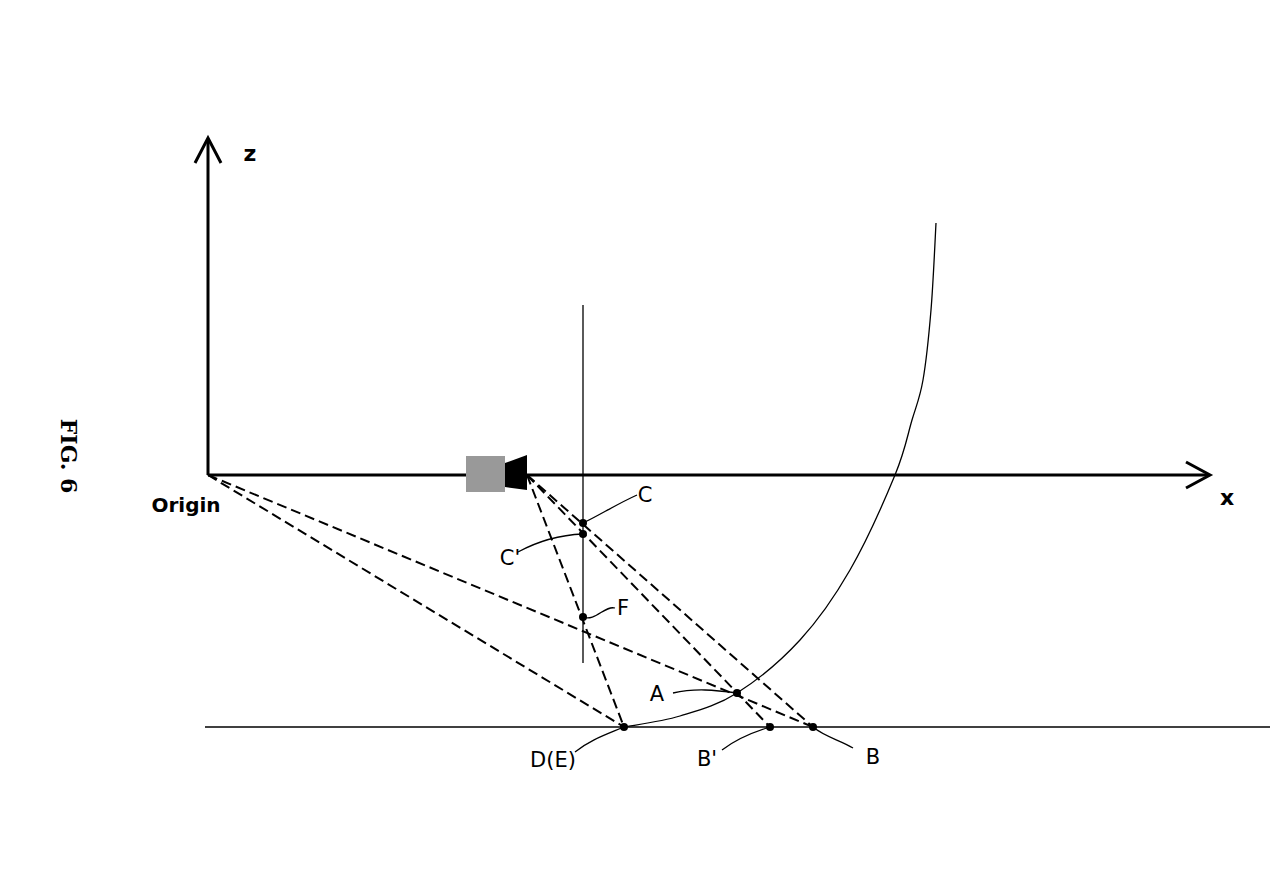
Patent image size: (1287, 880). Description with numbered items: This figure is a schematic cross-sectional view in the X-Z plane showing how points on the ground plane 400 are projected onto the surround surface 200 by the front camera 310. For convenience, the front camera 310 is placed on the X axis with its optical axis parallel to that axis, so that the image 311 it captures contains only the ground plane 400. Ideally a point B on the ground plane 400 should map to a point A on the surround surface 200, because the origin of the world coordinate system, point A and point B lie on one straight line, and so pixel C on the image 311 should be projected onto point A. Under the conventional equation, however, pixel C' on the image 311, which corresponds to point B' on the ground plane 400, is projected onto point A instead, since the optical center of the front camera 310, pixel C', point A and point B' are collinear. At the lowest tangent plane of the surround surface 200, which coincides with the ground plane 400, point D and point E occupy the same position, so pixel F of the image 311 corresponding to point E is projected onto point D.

The surround surface 200 is at (923, 380).
The front camera 310 is at (468, 457).
The image 311 is at (583, 412).
The ground plane 400 is at (1062, 727).